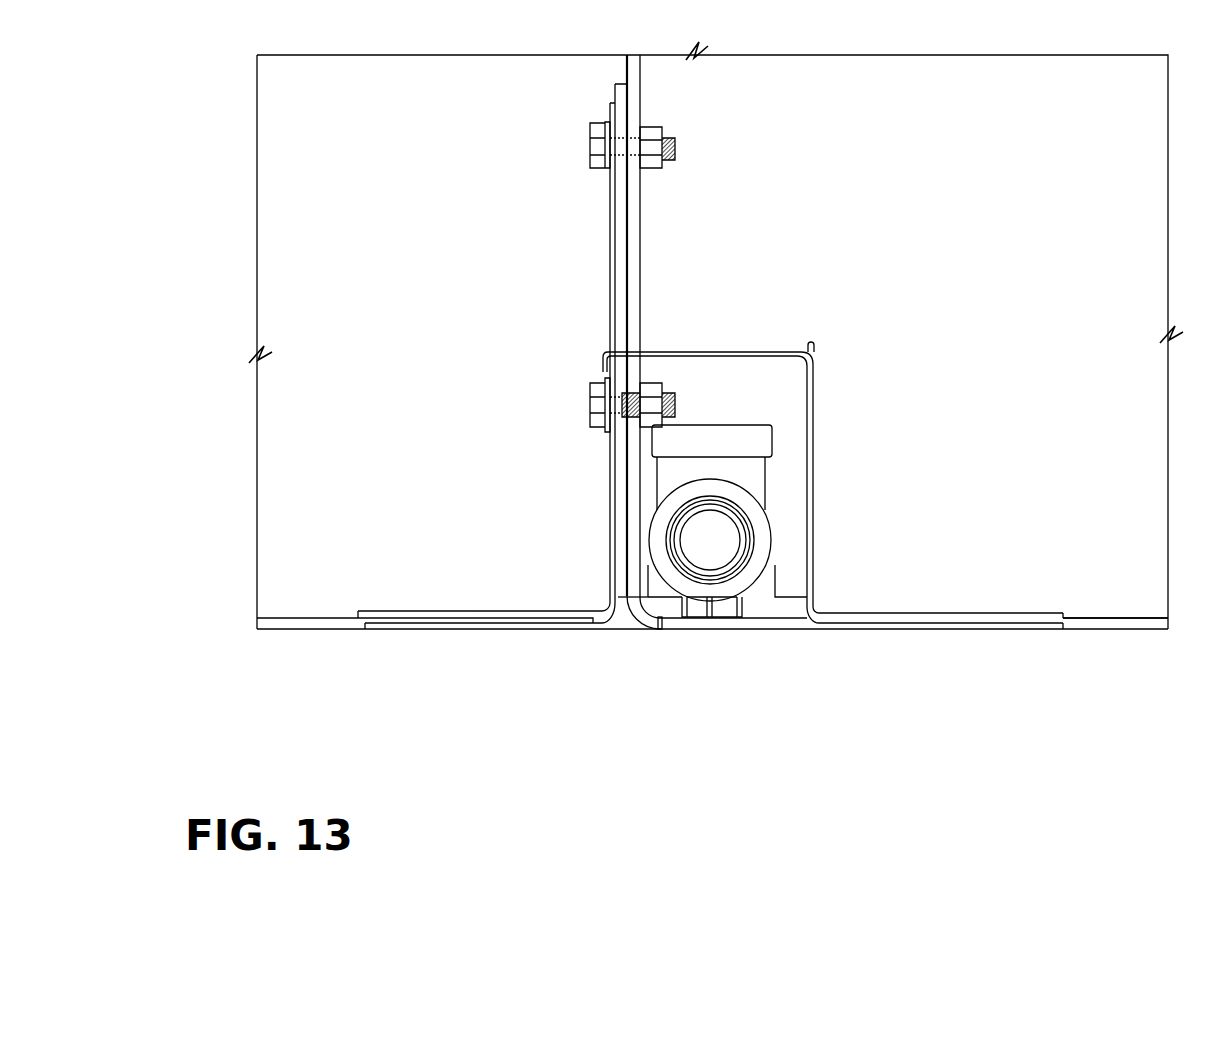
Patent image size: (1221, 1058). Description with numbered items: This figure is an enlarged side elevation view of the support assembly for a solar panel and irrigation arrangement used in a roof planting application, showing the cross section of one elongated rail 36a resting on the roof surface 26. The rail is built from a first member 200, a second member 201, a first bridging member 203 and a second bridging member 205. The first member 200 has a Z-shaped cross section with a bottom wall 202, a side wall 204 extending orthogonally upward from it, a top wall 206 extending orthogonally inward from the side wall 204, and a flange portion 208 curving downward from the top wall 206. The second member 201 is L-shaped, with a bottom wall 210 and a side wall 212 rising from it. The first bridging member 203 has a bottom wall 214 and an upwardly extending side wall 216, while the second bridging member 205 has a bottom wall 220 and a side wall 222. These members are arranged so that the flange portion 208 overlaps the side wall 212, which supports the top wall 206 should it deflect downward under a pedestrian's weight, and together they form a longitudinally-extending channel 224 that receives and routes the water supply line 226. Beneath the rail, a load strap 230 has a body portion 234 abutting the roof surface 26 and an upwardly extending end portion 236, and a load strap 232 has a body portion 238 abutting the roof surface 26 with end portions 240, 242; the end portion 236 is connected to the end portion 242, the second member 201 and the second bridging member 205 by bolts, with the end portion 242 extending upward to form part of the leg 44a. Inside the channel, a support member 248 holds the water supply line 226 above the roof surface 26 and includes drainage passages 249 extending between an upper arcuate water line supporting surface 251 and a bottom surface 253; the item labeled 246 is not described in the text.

The roof surface 26 is at (305, 613).
The load strap 230 is at (314, 633).
The body portion 234 is at (356, 612).
The bottom wall 220 is at (401, 625).
The bottom wall 210 is at (470, 615).
The side wall 222 is at (508, 607).
The side wall 212 is at (618, 460).
The second member 201 is at (607, 505).
The end portion 236 is at (621, 292).
The second bridging member 205 is at (603, 214).
The end portion 240 is at (633, 238).
The leg 44a is at (642, 190).
The load strap 232 is at (643, 272).
The channel 224 is at (601, 180).
The end portion 242 is at (600, 408).
The flange portion 208 is at (600, 358).
The top wall 206 is at (700, 350).
The elongated rail 36a is at (797, 333).
The side wall 216 is at (817, 345).
The side wall 204 is at (815, 445).
The first member 200 is at (818, 490).
The first bridging member 203 is at (892, 606).
The bottom wall 214 is at (977, 612).
The bottom wall 202 is at (1020, 623).
The body portion 238 is at (1115, 617).
The water supply line 226 is at (770, 542).
The support member 248 is at (773, 600).
The upper arcuate water line supporting surface 251 is at (655, 555).
The drainage passages 249 is at (690, 625).
The foot 246 is at (667, 626).
The bottom surface 253 is at (625, 634).